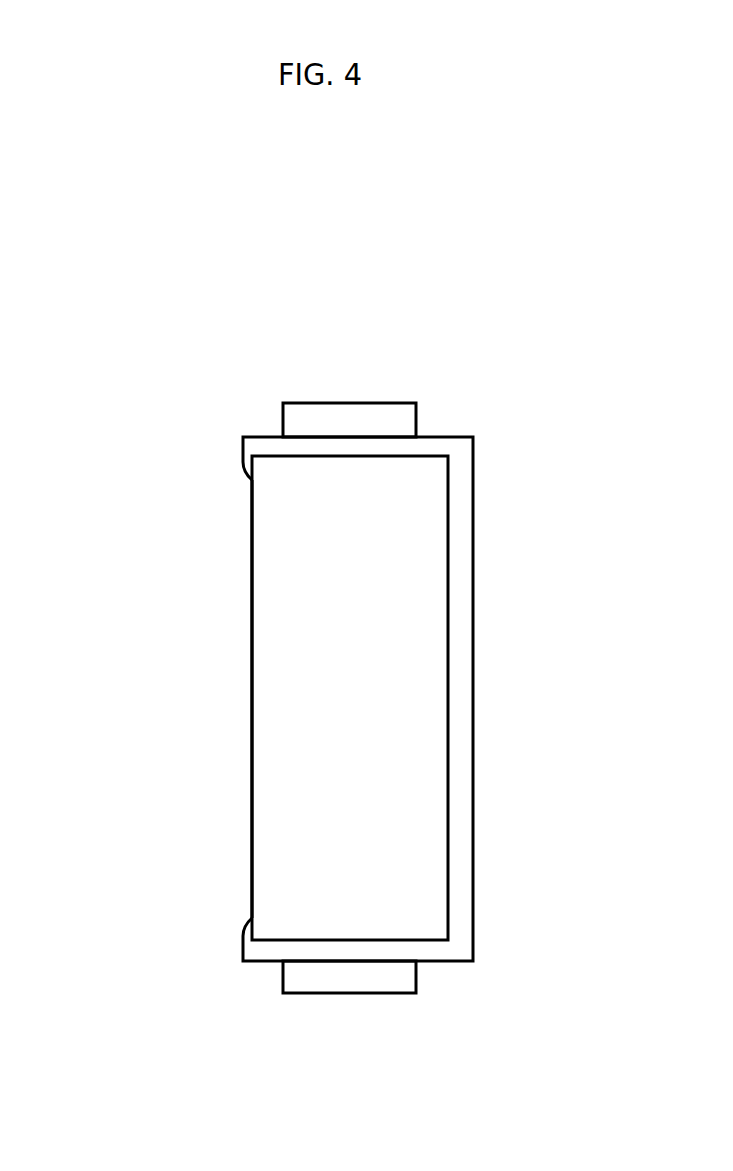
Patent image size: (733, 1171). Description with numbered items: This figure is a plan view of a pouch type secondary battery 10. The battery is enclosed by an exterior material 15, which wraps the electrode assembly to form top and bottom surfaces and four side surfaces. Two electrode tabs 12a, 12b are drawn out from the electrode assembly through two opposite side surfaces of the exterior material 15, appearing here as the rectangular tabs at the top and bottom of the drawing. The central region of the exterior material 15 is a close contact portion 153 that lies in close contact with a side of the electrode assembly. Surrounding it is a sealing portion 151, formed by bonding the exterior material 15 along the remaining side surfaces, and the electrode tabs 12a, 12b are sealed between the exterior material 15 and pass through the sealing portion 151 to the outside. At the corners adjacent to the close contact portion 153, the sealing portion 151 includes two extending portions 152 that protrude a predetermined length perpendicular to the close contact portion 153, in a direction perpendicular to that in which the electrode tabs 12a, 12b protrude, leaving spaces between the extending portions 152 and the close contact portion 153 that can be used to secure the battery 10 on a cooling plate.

The pouch type secondary battery 10 is at (92, 270).
The electrode tab 12a is at (343, 424).
The electrode tab 12b is at (348, 975).
The exterior material 15 is at (483, 699).
The sealing portion 151 is at (458, 853).
The extending portion 152 is at (243, 440).
The close contact portion 153 is at (252, 697).